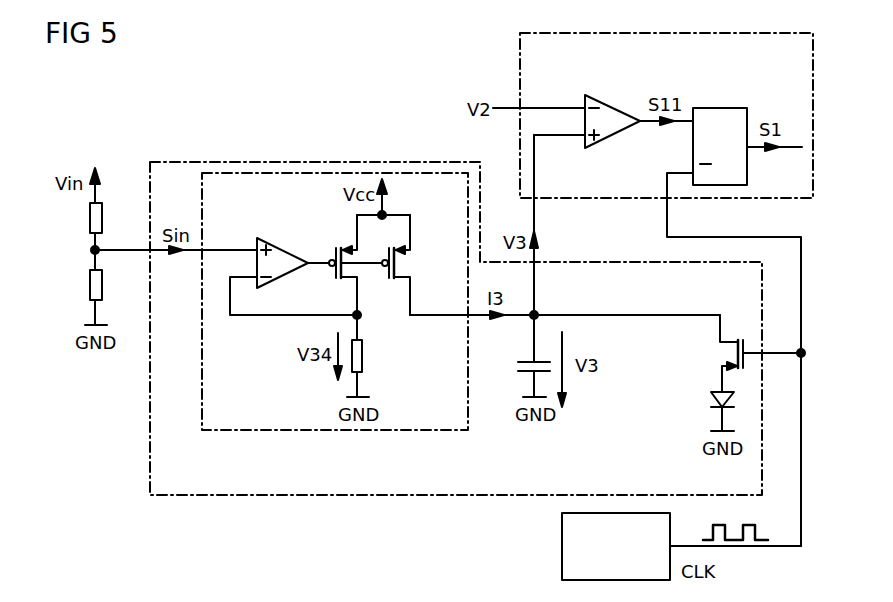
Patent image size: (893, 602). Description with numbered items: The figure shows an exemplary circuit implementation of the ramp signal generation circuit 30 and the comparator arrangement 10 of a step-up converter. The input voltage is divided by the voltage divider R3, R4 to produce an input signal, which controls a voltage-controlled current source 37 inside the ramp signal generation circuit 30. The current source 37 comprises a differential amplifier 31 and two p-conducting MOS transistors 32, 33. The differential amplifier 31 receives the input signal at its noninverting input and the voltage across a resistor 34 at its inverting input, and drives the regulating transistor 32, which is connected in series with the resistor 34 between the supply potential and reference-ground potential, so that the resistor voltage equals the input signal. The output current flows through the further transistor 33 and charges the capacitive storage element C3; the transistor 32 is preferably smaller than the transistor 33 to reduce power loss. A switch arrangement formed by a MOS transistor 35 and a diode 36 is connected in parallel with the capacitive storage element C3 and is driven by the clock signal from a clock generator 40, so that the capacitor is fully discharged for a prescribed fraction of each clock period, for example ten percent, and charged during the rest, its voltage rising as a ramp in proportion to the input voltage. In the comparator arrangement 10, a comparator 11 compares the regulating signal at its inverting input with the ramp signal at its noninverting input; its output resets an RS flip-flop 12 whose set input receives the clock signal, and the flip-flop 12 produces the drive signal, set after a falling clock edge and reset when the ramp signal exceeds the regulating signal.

The comparator arrangement 10 is at (518, 72).
The comparator 11 is at (612, 100).
The RS flip-flop 12 is at (718, 108).
The ramp signal generation circuit 30 is at (328, 161).
The differential amplifier 31 is at (284, 250).
The MOS transistor 32 is at (334, 280).
The MOS transistor 33 is at (400, 262).
The resistor 34 is at (364, 356).
The MOS transistor 35 is at (735, 348).
The diode 36 is at (712, 396).
The voltage-controlled current source 37 is at (345, 432).
The clock generator 40 is at (562, 538).
The voltage divider resistor R3 is at (89, 213).
The voltage divider resistor R4 is at (89, 278).
The capacitive storage element C3 is at (519, 366).